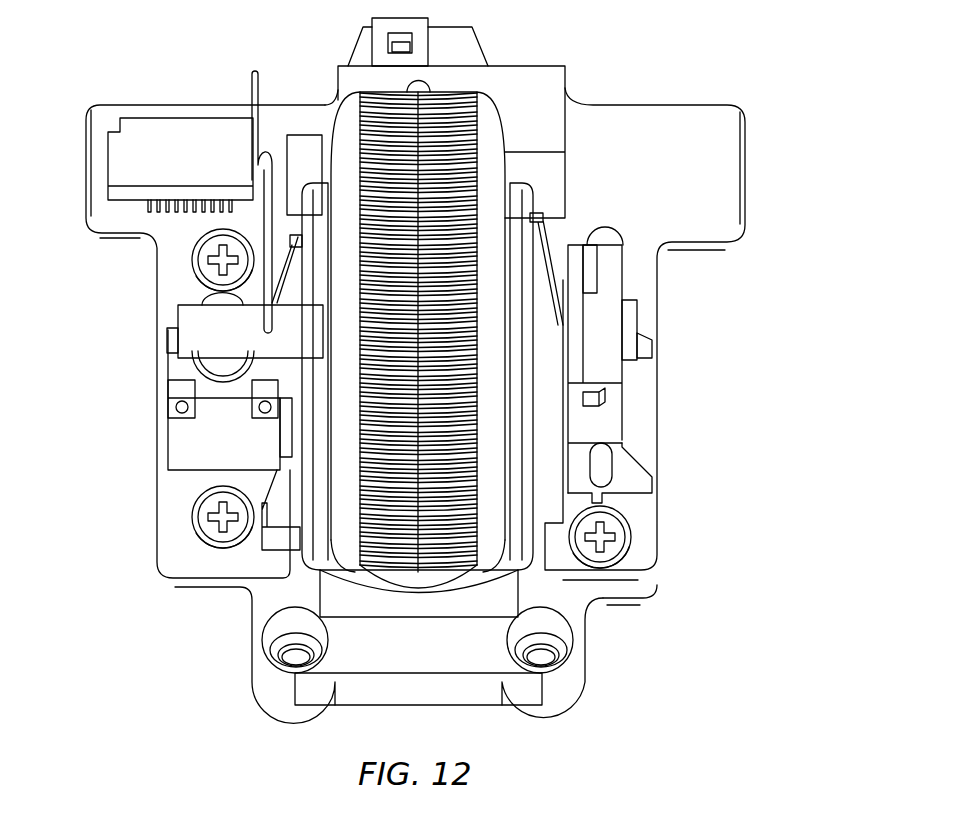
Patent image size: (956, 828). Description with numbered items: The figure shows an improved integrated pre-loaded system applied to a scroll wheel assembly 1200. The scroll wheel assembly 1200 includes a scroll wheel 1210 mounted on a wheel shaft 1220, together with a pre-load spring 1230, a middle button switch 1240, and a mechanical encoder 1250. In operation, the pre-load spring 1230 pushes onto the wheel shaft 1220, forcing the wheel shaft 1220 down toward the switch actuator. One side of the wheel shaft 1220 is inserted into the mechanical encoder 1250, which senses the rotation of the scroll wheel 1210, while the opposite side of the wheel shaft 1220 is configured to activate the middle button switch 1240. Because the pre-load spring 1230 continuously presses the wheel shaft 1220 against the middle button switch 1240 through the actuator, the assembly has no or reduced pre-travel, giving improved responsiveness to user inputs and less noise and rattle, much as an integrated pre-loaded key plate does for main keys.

The scroll wheel assembly 1200 is at (688, 55).
The scroll wheel 1210 is at (487, 138).
The wheel shaft 1220 is at (205, 322).
The pre-load spring 1230 is at (250, 96).
The middle button switch 1240 is at (215, 440).
The mechanical encoder 1250 is at (608, 256).